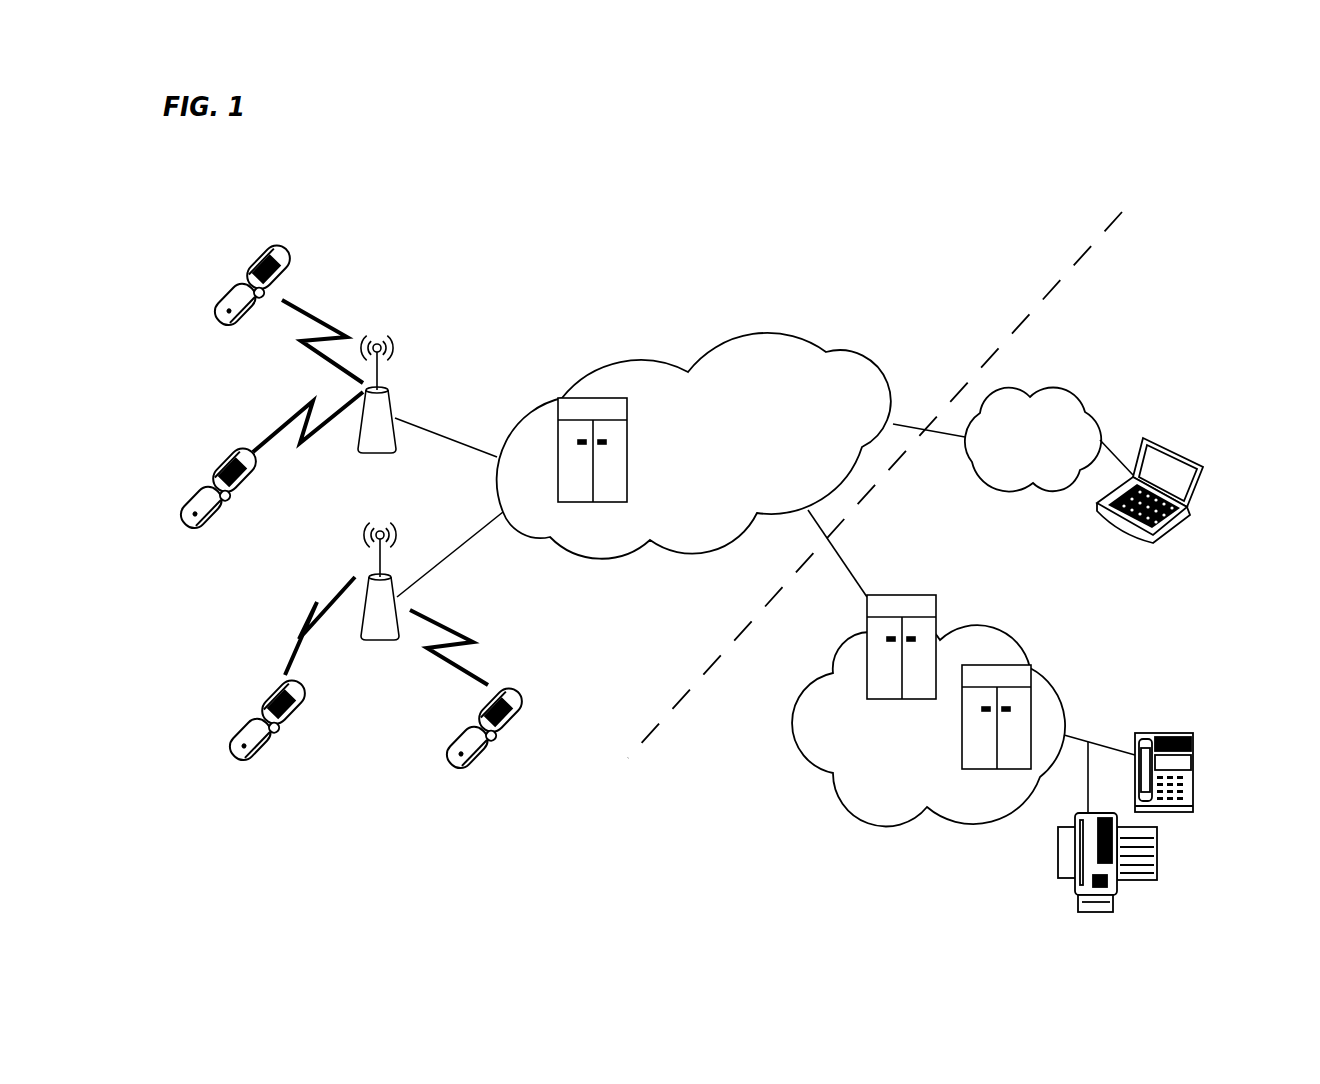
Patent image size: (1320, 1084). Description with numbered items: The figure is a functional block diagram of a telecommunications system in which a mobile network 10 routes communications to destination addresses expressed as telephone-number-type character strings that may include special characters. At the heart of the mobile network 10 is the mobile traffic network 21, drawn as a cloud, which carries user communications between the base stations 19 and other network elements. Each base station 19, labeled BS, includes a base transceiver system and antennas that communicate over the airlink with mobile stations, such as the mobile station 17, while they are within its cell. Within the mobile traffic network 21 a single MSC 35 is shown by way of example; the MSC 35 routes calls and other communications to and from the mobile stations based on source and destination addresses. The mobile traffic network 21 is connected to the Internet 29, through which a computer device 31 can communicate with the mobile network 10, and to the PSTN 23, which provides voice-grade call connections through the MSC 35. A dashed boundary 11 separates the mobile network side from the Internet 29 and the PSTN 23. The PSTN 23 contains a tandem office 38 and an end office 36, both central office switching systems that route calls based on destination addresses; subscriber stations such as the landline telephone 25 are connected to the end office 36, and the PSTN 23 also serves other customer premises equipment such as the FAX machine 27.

The mobile network 10 is at (398, 203).
The boundary between mobile network and public networks 11 is at (875, 485).
The mobile station 17 is at (513, 692).
The base station 19 is at (383, 386).
The mobile traffic network 21 is at (673, 551).
The PSTN 23 is at (840, 790).
The landline telephone 25 is at (1193, 750).
The FAX machine 27 is at (1057, 860).
The Internet 29 is at (1090, 415).
The computer device 31 is at (1173, 451).
The MSC 35 is at (557, 448).
The end office 36 is at (998, 663).
The tandem office 38 is at (866, 645).